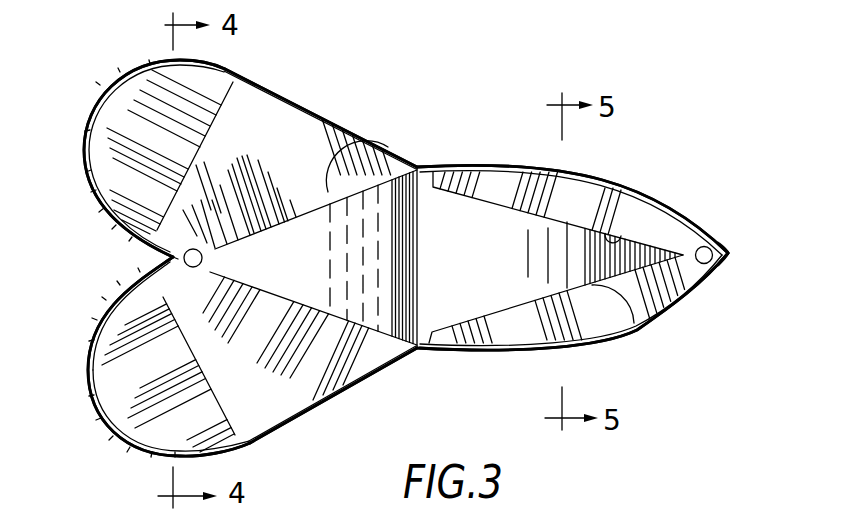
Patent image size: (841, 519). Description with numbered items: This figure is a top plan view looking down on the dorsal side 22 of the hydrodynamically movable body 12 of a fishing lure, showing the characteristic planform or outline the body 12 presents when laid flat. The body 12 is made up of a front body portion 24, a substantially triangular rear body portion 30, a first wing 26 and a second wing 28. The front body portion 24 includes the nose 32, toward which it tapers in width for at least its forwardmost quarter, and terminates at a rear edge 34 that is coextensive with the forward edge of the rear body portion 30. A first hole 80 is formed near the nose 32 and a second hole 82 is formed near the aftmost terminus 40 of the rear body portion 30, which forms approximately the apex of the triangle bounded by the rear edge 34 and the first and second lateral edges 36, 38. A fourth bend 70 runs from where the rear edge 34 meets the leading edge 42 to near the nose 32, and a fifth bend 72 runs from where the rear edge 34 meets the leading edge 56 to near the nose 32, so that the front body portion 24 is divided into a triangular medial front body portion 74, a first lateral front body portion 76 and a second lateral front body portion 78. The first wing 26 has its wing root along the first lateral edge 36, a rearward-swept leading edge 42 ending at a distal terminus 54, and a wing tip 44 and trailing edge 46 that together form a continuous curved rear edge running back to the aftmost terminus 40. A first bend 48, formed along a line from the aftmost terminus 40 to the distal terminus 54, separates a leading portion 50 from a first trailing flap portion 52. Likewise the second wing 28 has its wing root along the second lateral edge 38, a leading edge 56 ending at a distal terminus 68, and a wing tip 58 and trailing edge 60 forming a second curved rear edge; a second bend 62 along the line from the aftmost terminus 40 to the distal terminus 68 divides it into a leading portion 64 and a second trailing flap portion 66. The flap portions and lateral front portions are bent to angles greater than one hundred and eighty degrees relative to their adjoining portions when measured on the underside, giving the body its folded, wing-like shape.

The body 12 is at (411, 126).
The dorsal side 22 is at (356, 303).
The front body portion 24 is at (473, 228).
The first wing 26 is at (275, 413).
The second wing 28 is at (280, 120).
The rear body portion 30 is at (381, 152).
The nose 32 is at (730, 254).
The rear edge 34 is at (420, 242).
The first lateral edge 36 is at (308, 308).
The second lateral edge 38 is at (308, 208).
The aftmost terminus 40 is at (165, 262).
The leading edge 42 is at (344, 390).
The wing tip 44 is at (217, 453).
The trailing edge 46 is at (98, 410).
The first bend 48 is at (217, 397).
The leading portion 50 is at (252, 306).
The first trailing flap portion 52 is at (110, 377).
The distal terminus 54 is at (243, 450).
The leading edge 56 is at (322, 116).
The wing tip 58 is at (220, 67).
The trailing edge 60 is at (85, 160).
The second bend 62 is at (195, 143).
The leading portion 64 is at (226, 222).
The second trailing flap portion 66 is at (125, 101).
The distal terminus 68 is at (250, 82).
The fourth bend 70 is at (622, 340).
The fifth bend 72 is at (636, 183).
The medial front body portion 74 is at (477, 318).
The first lateral front body portion 76 is at (533, 337).
The second lateral front body portion 78 is at (592, 200).
The first hole 80 is at (713, 248).
The second hole 82 is at (117, 300).